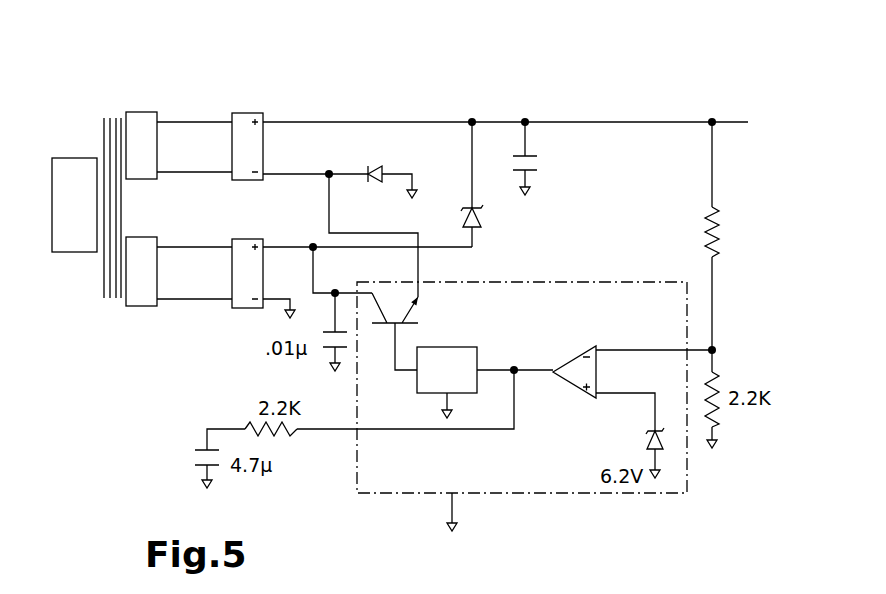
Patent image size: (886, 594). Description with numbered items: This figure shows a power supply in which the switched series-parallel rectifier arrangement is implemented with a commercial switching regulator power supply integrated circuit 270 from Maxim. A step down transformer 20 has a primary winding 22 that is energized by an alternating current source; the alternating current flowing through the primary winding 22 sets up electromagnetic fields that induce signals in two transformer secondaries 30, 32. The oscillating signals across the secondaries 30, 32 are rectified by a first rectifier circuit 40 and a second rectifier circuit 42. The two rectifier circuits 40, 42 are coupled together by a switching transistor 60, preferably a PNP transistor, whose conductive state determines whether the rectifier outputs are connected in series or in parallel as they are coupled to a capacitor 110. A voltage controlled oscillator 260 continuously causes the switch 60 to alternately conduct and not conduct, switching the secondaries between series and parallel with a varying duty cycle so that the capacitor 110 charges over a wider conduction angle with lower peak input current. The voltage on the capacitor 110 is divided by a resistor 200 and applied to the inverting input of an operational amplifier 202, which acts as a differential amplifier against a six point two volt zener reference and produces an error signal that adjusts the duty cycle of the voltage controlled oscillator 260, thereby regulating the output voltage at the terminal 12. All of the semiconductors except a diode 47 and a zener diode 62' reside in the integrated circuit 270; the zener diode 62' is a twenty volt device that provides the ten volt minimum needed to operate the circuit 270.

The terminal 12 is at (740, 122).
The step down transformer 20 is at (76, 280).
The primary winding 22 is at (75, 162).
The transformer secondary 30 is at (153, 112).
The transformer secondary 32 is at (146, 307).
The first rectifier circuit 40 is at (240, 120).
The second rectifier circuit 42 is at (242, 306).
The diode 47 is at (375, 168).
The switching transistor 60 is at (412, 318).
The zener diode 62' is at (503, 187).
The capacitor 110 is at (545, 168).
The resistor 200 is at (722, 233).
The operational amplifier 202 is at (577, 374).
The voltage controlled oscillator 260 is at (467, 357).
The switching regulator power supply integrated circuit 270 is at (528, 495).